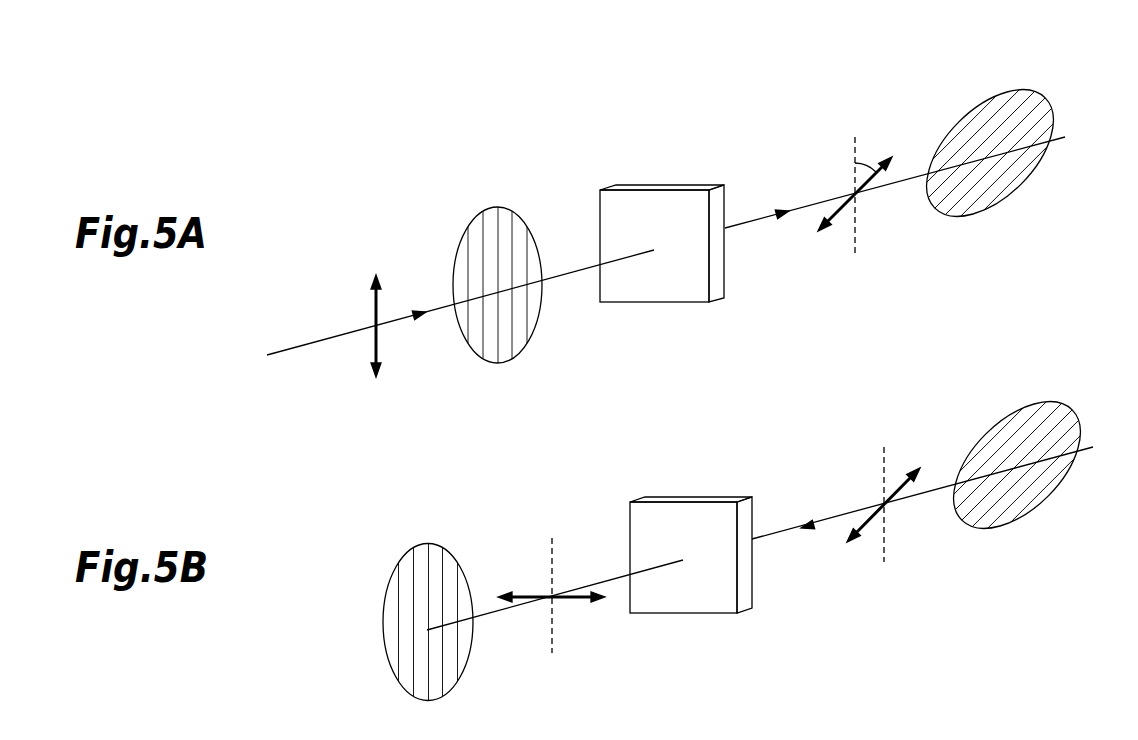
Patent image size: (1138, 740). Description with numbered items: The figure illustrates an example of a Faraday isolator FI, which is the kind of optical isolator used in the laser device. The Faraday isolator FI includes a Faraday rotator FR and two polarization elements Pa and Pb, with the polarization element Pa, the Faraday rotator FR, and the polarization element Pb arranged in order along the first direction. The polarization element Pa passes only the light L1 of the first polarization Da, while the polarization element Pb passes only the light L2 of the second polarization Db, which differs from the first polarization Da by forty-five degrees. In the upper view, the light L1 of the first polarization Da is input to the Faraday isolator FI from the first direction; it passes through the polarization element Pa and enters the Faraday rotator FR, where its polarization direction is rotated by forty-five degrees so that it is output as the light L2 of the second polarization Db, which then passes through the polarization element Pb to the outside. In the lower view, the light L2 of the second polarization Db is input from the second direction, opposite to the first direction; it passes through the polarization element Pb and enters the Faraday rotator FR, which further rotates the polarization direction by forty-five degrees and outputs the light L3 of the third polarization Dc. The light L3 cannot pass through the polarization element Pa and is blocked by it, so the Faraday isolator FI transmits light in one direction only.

In FIG. 5A, the light of the first polarization L1 is at (442, 306).
In FIG. 5A, the light of the second polarization L2 is at (825, 200).
In FIG. 5B, the light of the second polarization L2 is at (857, 512).
In FIG. 5B, the light of the third polarization L3 is at (607, 580).
In FIG. 5A, the first polarization Da is at (375, 305).
In FIG. 5A, the second polarization Db is at (861, 199).
In FIG. 5B, the second polarization Db is at (896, 503).
In FIG. 5B, the third polarization Dc is at (573, 602).
In FIG. 5A, the polarization element Pa is at (527, 219).
In FIG. 5B, the polarization element Pa is at (455, 558).
In FIG. 5A, the polarization element Pb is at (1048, 98).
In FIG. 5B, the polarization element Pb is at (1077, 408).
In FIG. 5A, the Faraday rotator FR is at (664, 185).
In FIG. 5B, the Faraday rotator FR is at (700, 497).
In FIG. 5A, the Faraday isolator FI is at (922, 78).
In FIG. 5B, the Faraday isolator FI is at (952, 387).